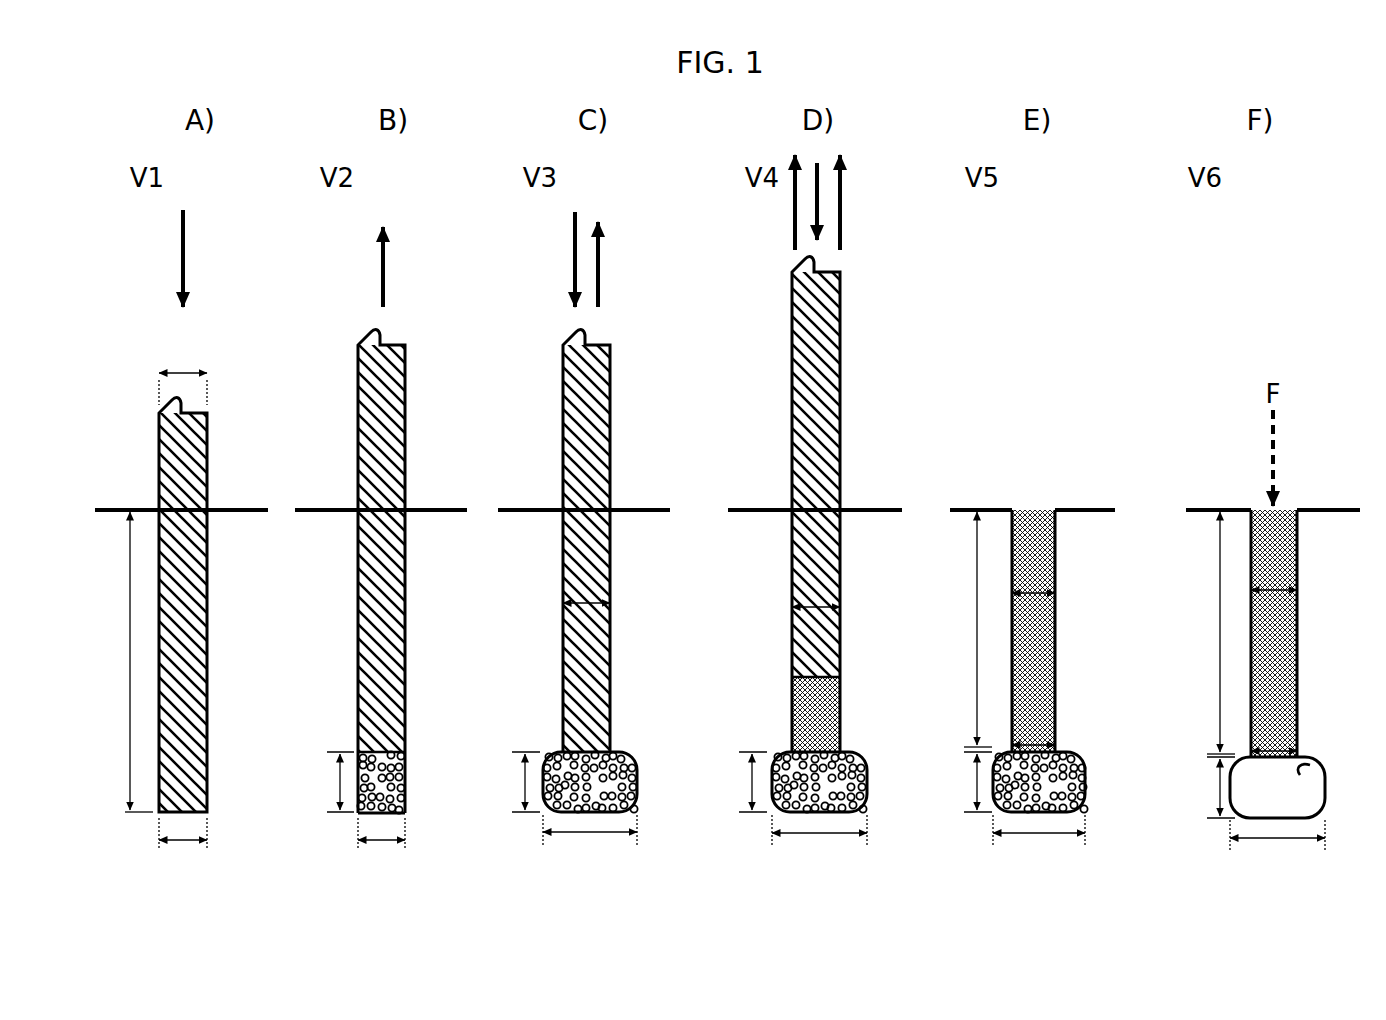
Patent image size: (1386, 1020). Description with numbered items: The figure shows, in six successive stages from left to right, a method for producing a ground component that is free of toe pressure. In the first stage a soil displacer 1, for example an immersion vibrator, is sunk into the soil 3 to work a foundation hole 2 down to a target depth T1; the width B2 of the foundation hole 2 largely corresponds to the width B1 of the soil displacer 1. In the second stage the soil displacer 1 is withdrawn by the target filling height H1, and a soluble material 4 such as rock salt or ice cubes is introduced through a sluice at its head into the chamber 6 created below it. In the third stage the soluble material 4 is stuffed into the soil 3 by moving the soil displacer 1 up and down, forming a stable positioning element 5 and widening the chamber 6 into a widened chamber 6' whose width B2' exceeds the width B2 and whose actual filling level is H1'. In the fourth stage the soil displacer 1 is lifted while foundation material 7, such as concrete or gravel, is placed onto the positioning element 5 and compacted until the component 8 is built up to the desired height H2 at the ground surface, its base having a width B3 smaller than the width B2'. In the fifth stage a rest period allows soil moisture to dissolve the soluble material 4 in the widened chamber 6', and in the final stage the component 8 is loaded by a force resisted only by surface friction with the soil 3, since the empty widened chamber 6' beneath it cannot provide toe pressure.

The soil displacer 1 is at (159, 476).
The foundation hole 2 is at (190, 660).
The soil 3 is at (232, 530).
The soluble material 4 is at (405, 780).
The positioning element 5 is at (637, 776).
The chamber 6 is at (402, 745).
The widened chamber 6' is at (959, 771).
The foundation material 7 is at (826, 713).
The component 8 is at (1040, 619).
The width of the soil displacer B1 is at (183, 372).
The width of the foundation hole B2 is at (755, 725).
The width of the widened chamber B2' is at (934, 845).
The width at the base of the component B3 is at (1045, 745).
The target filling height H1 is at (325, 782).
The actual filling level H1' is at (858, 785).
The desired height H2 is at (1084, 633).
The target depth T1 is at (118, 662).